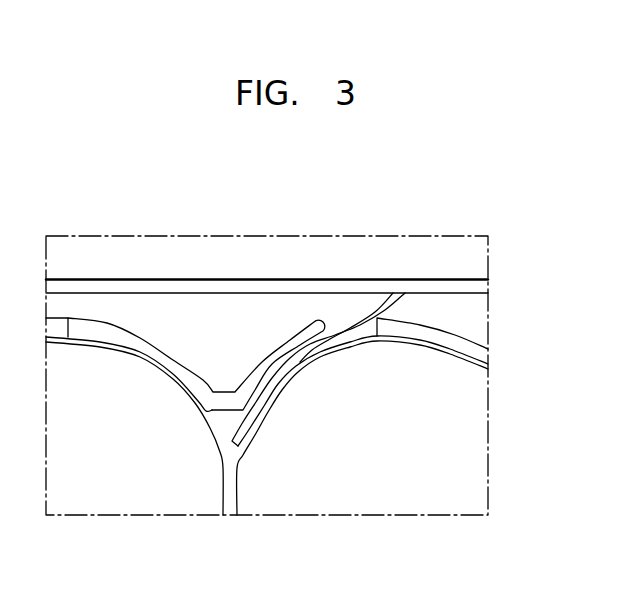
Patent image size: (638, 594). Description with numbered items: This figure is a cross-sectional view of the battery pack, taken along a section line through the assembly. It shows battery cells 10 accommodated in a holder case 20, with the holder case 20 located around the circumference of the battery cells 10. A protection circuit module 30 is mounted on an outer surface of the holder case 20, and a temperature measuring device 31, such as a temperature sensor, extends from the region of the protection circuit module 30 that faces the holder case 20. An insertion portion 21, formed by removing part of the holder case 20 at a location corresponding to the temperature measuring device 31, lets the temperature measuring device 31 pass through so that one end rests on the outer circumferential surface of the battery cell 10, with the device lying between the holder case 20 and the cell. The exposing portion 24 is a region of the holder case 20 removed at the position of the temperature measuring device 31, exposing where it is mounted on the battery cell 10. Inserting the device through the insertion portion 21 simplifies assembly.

The battery cell 10 is at (465, 458).
The holder case 20 is at (450, 332).
The insertion portion 21 is at (335, 322).
The exposing portion 24 is at (372, 350).
The protection circuit module 30 is at (443, 290).
The temperature measuring device 31 is at (328, 342).